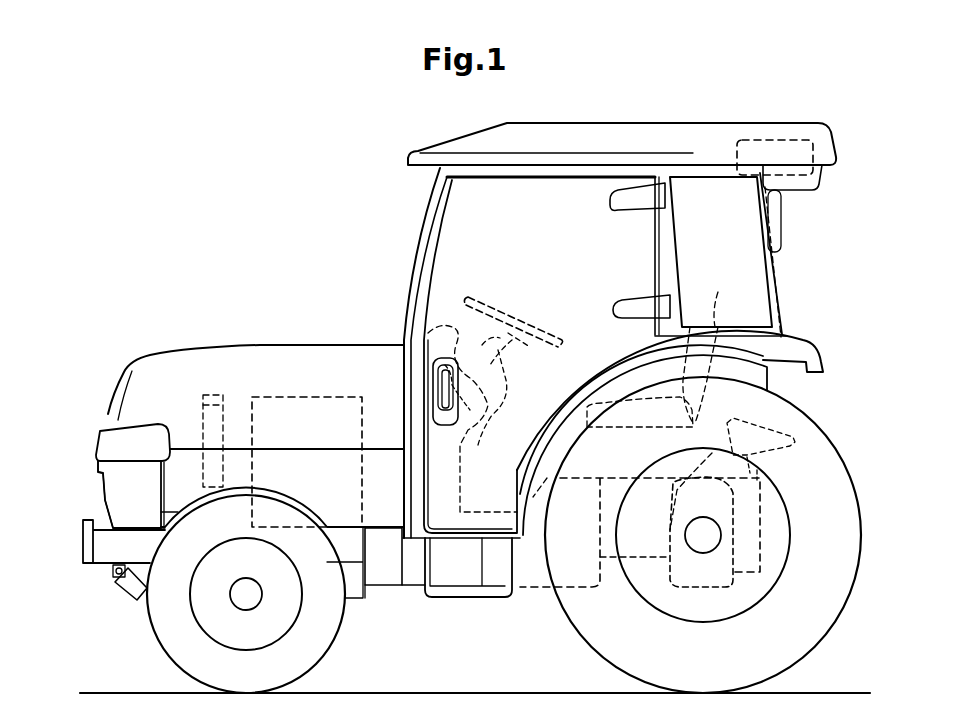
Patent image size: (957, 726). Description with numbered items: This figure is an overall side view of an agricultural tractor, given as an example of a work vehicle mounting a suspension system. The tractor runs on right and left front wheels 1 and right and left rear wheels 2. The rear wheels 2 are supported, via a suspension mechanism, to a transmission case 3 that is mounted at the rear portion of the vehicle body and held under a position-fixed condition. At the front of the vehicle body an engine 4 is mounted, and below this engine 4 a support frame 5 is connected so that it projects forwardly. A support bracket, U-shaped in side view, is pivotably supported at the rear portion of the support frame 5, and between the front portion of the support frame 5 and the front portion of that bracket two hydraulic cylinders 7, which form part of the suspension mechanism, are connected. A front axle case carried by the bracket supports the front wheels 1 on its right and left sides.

The front wheels 1 is at (177, 640).
The rear wheels 2 is at (592, 630).
The transmission case 3 is at (643, 557).
The engine 4 is at (291, 397).
The support frame 5 is at (120, 540).
The hydraulic cylinders 7 is at (137, 593).